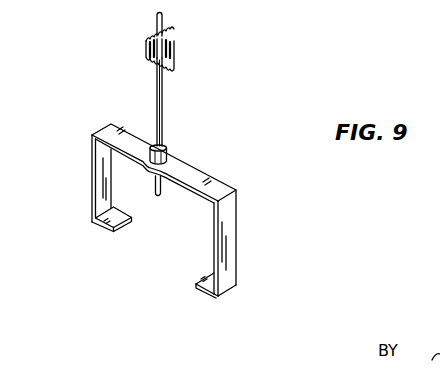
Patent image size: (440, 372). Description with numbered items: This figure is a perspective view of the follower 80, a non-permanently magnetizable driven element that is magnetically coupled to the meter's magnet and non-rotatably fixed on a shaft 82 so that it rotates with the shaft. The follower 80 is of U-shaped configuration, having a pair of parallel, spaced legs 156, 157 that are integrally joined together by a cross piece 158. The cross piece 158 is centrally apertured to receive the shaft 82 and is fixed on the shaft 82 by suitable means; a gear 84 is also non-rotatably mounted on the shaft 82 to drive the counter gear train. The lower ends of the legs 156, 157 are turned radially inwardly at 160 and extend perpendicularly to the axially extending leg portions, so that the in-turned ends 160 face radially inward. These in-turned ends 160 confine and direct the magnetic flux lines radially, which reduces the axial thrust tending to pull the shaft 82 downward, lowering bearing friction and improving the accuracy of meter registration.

The follower 80 is at (227, 222).
The shaft 82 is at (162, 118).
The gear 84 is at (175, 47).
The leg 156 is at (232, 256).
The leg 157 is at (92, 194).
The cross piece 158 is at (203, 176).
The in-turned ends 160 is at (100, 232).